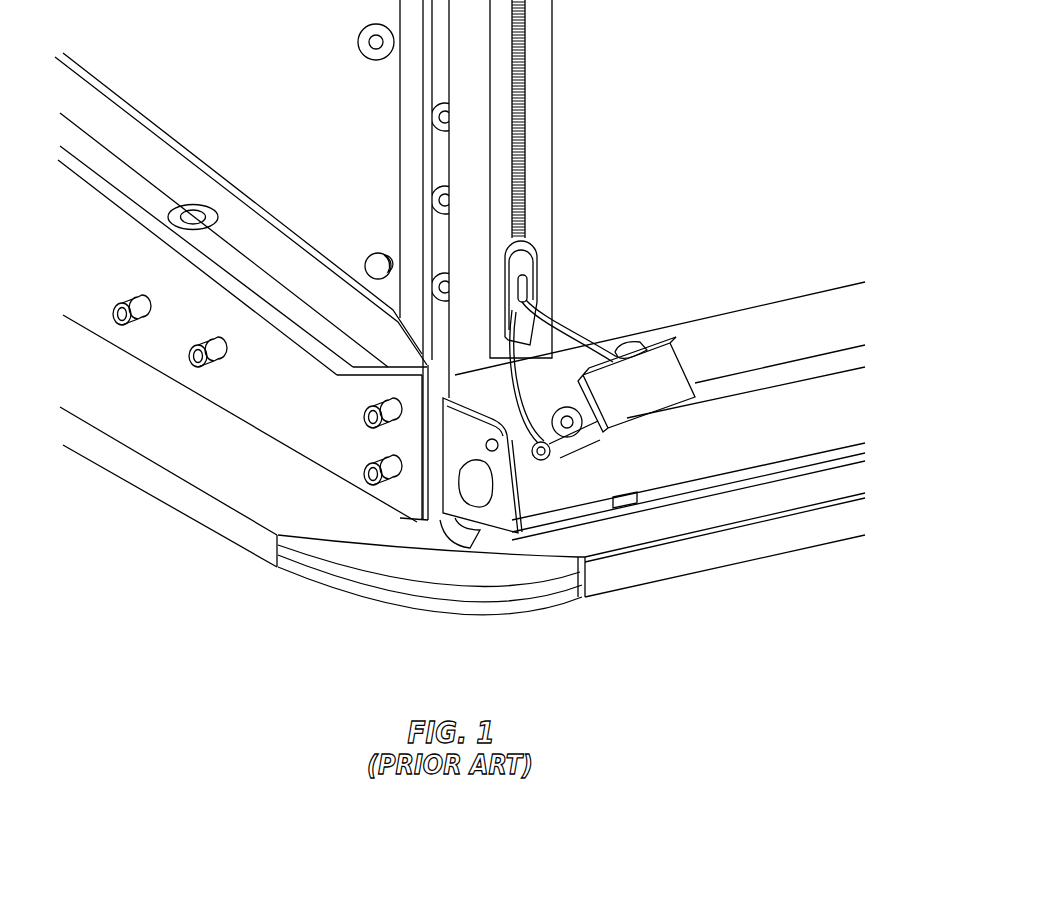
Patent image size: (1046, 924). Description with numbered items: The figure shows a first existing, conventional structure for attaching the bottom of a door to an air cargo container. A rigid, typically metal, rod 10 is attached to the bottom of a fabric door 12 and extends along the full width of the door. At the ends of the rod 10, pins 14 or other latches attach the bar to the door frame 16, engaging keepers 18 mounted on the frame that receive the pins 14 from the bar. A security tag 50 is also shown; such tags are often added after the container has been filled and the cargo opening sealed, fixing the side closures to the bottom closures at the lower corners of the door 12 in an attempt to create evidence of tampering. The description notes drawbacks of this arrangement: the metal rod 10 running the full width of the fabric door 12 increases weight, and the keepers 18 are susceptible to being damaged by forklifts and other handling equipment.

The rod 10 is at (653, 450).
The fabric door 12 is at (703, 39).
The pins 14 is at (472, 483).
The door frame 16 is at (440, 240).
The keepers 18 is at (495, 465).
The security tag 50 is at (618, 388).